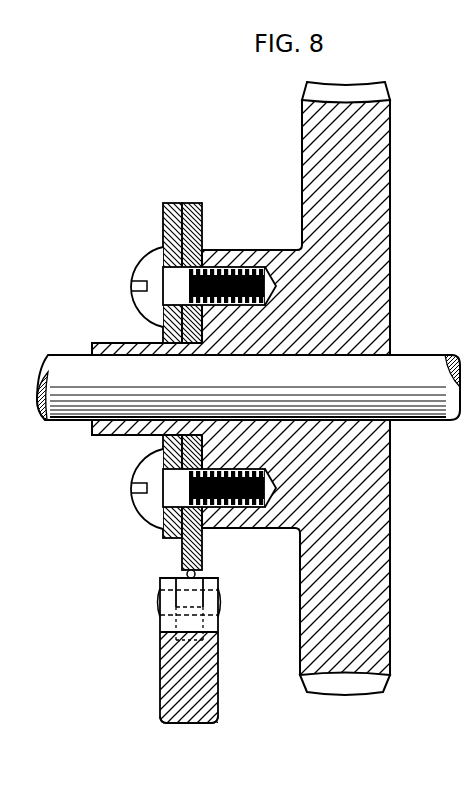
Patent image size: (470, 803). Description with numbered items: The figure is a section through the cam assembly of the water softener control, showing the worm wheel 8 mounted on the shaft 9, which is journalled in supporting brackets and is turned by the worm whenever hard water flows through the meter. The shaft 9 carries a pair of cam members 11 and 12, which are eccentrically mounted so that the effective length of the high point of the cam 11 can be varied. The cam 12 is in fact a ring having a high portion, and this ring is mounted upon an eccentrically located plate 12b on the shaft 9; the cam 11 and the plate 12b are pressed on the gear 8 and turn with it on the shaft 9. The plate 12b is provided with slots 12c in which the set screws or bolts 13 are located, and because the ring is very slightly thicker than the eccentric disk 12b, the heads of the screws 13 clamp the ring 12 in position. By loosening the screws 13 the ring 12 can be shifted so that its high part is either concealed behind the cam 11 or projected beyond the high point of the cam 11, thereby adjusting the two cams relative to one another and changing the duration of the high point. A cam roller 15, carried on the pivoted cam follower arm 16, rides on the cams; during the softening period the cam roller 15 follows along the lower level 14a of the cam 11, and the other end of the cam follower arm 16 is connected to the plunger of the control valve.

The worm wheel 8 is at (302, 132).
The shaft 9 is at (68, 358).
The cam member 11 is at (203, 202).
The cam member 12 is at (163, 206).
The eccentrically located plate 12b is at (163, 331).
The slots 12c is at (166, 244).
The set screws 13 is at (142, 267).
The lower level of the cam 14a is at (233, 570).
The cam roller 15 is at (185, 572).
The cam follower arm 16 is at (160, 657).